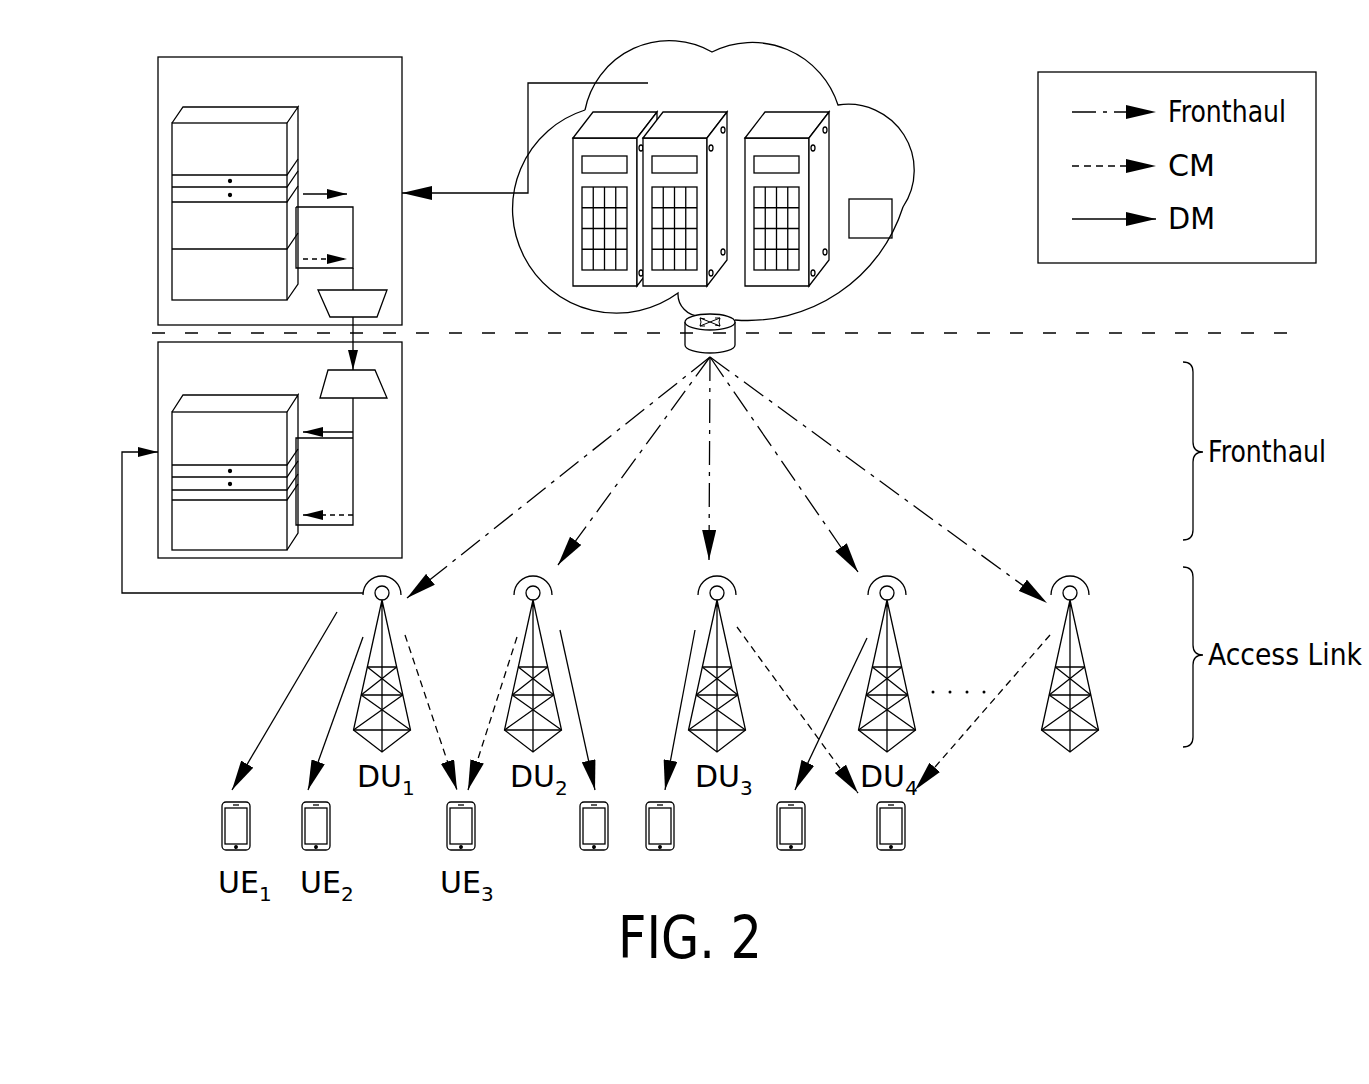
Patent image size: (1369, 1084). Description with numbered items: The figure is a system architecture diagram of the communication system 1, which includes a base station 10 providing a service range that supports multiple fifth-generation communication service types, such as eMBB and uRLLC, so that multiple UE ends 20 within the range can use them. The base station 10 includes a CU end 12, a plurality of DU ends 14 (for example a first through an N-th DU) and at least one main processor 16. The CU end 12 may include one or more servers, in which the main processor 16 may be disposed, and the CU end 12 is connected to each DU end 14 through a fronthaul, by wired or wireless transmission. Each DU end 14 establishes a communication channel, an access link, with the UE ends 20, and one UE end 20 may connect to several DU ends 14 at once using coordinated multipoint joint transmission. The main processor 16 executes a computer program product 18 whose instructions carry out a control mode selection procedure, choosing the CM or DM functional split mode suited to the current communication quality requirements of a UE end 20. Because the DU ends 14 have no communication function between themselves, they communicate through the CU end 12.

The communication system 1 is at (1237, 916).
The base station 10 is at (95, 64).
The CU end 12 is at (895, 148).
The DU end 14 is at (1097, 712).
The main processor 16 is at (820, 180).
The computer program product 18 is at (820, 219).
The UE end 20 is at (905, 835).